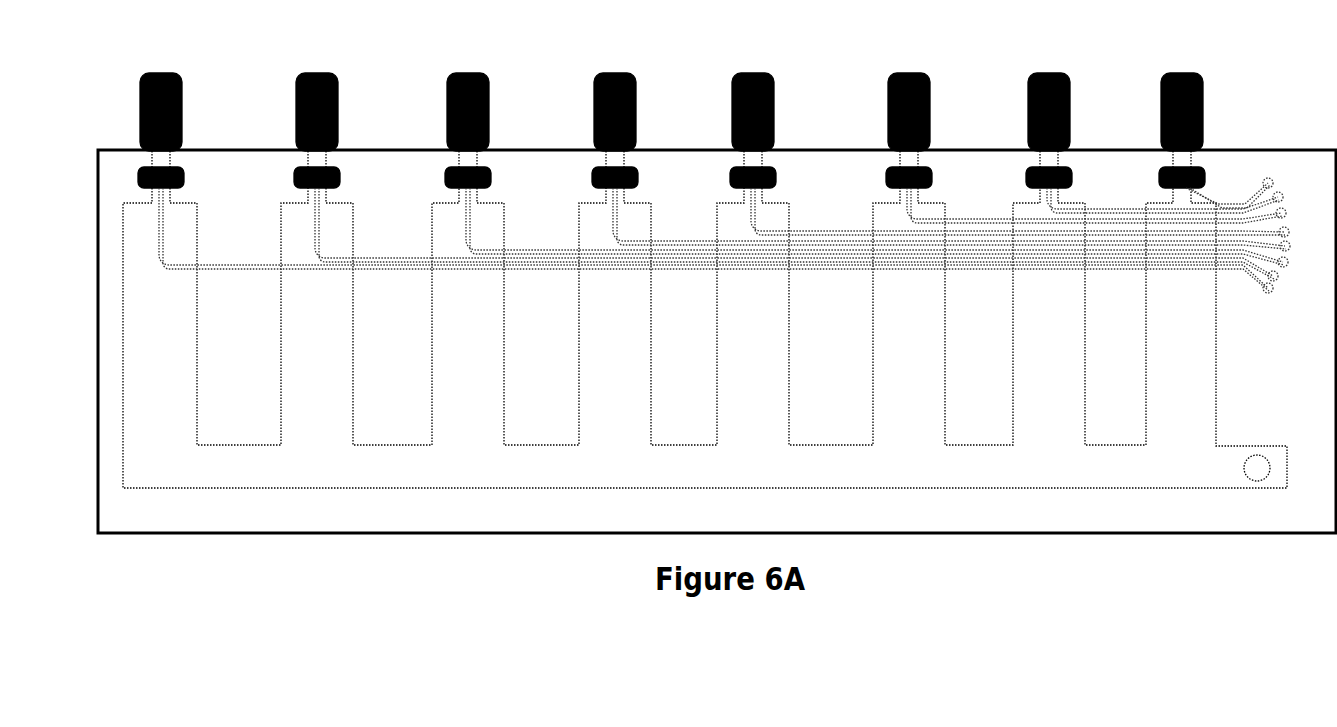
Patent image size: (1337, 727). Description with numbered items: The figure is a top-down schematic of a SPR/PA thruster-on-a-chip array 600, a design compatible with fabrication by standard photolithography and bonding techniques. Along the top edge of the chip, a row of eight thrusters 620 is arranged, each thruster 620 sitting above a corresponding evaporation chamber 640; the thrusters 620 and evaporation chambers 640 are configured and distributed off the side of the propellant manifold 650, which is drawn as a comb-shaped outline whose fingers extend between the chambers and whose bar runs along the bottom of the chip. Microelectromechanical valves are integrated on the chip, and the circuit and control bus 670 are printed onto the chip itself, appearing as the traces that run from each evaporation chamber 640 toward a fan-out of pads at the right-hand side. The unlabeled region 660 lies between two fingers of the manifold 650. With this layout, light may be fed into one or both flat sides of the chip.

The thruster-on-a-chip array 600 is at (402, 86).
The thruster 620 is at (1207, 110).
The evaporation chamber 640 is at (1160, 167).
The propellant manifold 650 is at (705, 338).
The conductive trace 660 is at (722, 270).
The control bus 670 is at (1278, 290).